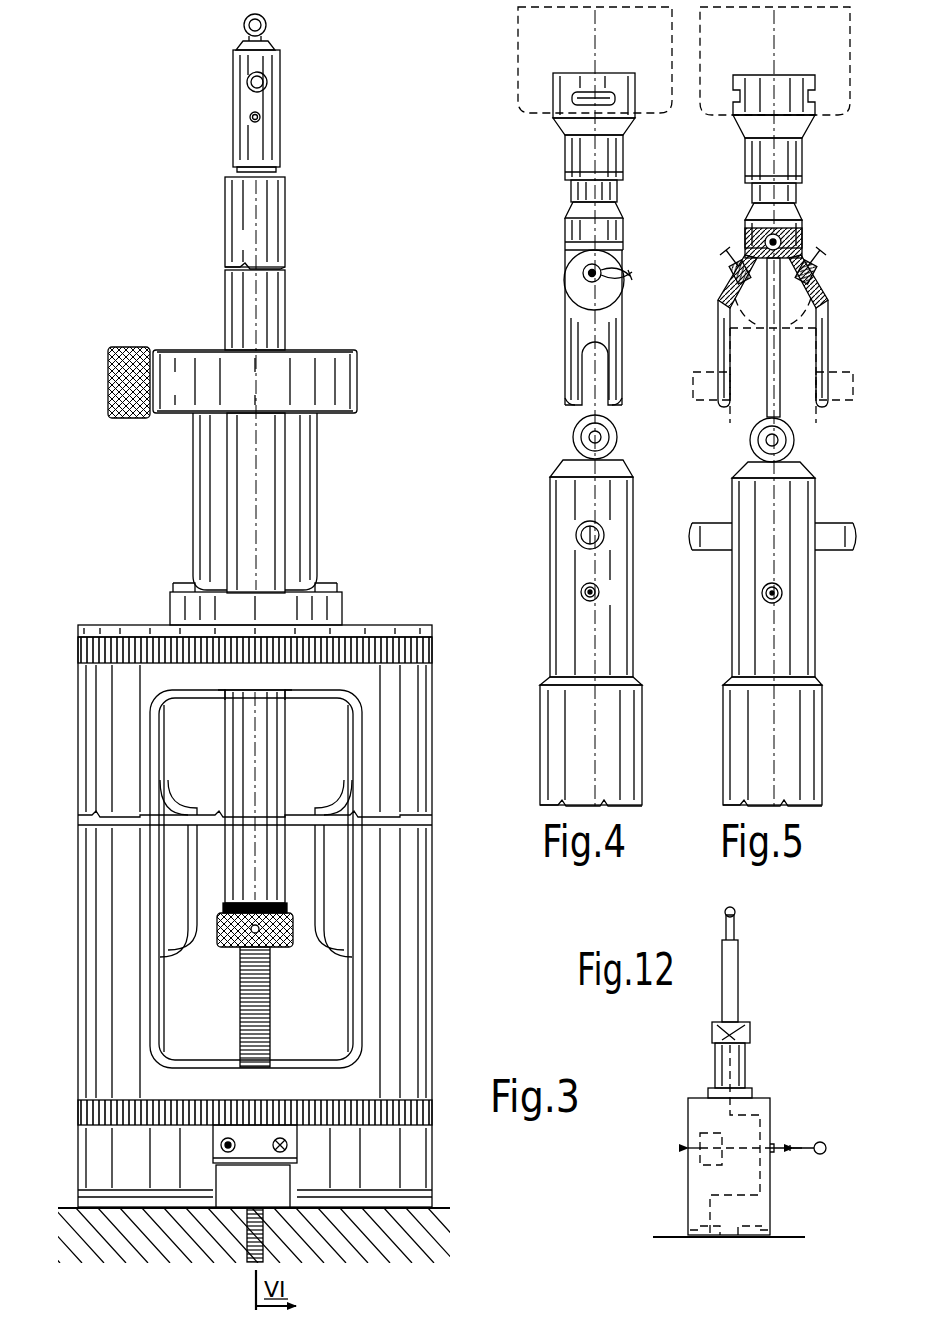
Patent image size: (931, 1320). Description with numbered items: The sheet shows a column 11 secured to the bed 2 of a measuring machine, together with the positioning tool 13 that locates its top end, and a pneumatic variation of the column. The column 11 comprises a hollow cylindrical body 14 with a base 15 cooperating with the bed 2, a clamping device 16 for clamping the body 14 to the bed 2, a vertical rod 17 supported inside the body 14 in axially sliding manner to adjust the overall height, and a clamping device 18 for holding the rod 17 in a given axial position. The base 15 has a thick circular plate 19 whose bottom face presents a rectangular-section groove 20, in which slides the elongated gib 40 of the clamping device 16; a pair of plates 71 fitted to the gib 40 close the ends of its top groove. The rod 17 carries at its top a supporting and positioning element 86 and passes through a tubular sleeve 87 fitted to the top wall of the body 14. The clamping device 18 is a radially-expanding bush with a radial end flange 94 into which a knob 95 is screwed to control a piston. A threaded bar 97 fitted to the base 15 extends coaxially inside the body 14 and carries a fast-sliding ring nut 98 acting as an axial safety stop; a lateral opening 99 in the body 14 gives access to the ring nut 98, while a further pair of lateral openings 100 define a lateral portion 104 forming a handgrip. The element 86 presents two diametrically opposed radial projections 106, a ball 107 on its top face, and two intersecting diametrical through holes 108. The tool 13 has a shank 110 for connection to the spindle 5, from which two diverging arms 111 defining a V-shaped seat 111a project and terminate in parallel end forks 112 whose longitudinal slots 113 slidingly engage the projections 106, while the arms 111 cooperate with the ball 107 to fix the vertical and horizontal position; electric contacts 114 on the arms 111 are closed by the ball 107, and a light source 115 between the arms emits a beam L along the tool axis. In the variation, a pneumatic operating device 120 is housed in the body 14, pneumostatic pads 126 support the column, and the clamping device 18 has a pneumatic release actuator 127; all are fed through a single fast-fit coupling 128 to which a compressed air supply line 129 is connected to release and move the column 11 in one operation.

In FIG. 3, the bed 2 is at (410, 1246).
In FIG. 4, the spindle 5 is at (520, 38).
In FIG. 5, the spindle 5 is at (828, 50).
In FIG. 3, the column 11 is at (148, 553).
In FIG. 4, the tool 13 is at (552, 228).
In FIG. 5, the tool 13 is at (735, 210).
In FIG. 3, the hollow cylindrical body 14 is at (436, 1011).
In FIG. 3, the base 15 is at (436, 1191).
In FIG. 3, the clamping device 16 is at (230, 1216).
In FIG. 3, the vertical rod 17 is at (262, 316).
In FIG. 3, the clamping device 18 is at (316, 352).
In FIG. 3, the circular plate 19 is at (102, 1154).
In FIG. 3, the groove 20 is at (284, 1190).
In FIG. 3, the gib 40 is at (214, 1176).
In FIG. 3, the plates 71 is at (256, 1143).
In FIG. 3, the supporting and positioning element 86 is at (268, 101).
In FIG. 4, the supporting and positioning element 86 is at (573, 645).
In FIG. 5, the supporting and positioning element 86 is at (795, 646).
In FIG. 3, the tubular sleeve 87 is at (301, 533).
In FIG. 3, the radial end flange 94 is at (340, 389).
In FIG. 3, the knob 95 is at (130, 345).
In FIG. 3, the threaded bar 97 is at (242, 1042).
In FIG. 3, the fast-sliding ring nut 98 is at (229, 947).
In FIG. 3, the lateral opening 99 is at (345, 905).
In FIG. 3, the lateral openings 100 is at (184, 855).
In FIG. 3, the lateral portion 104 is at (200, 897).
In FIG. 3, the radial projections 106 is at (247, 83).
In FIG. 4, the radial projections 106 is at (576, 536).
In FIG. 5, the radial projections 106 is at (702, 405).
In FIG. 3, the ball 107 is at (245, 31).
In FIG. 4, the ball 107 is at (578, 440).
In FIG. 5, the ball 107 is at (795, 445).
In FIG. 3, the diametrical through holes 108 is at (250, 118).
In FIG. 4, the diametrical through holes 108 is at (581, 596).
In FIG. 5, the diametrical through holes 108 is at (783, 596).
In FIG. 4, the shank 110 is at (565, 92).
In FIG. 5, the shank 110 is at (795, 100).
In FIG. 4, the diverging arms 111 is at (580, 296).
In FIG. 5, the diverging arms 111 is at (728, 300).
In FIG. 5, the V-shaped seat 111a is at (825, 320).
In FIG. 4, the end forks 112 is at (584, 344).
In FIG. 5, the end forks 112 is at (720, 352).
In FIG. 4, the longitudinal end slots 113 is at (590, 382).
In FIG. 5, the electric contacts 114 is at (744, 262).
In FIG. 5, the light source 115 is at (800, 241).
In FIG. 12, the pneumatic operating device 120 is at (688, 1152).
In FIG. 12, the pneumostatic pads 126 is at (712, 1228).
In FIG. 12, the pneumatic release actuator 127 is at (752, 1030).
In FIG. 12, the fast-fit supply coupling 128 is at (776, 1146).
In FIG. 12, the compressed air supply line 129 is at (807, 1153).
In FIG. 5, the beam L is at (776, 366).